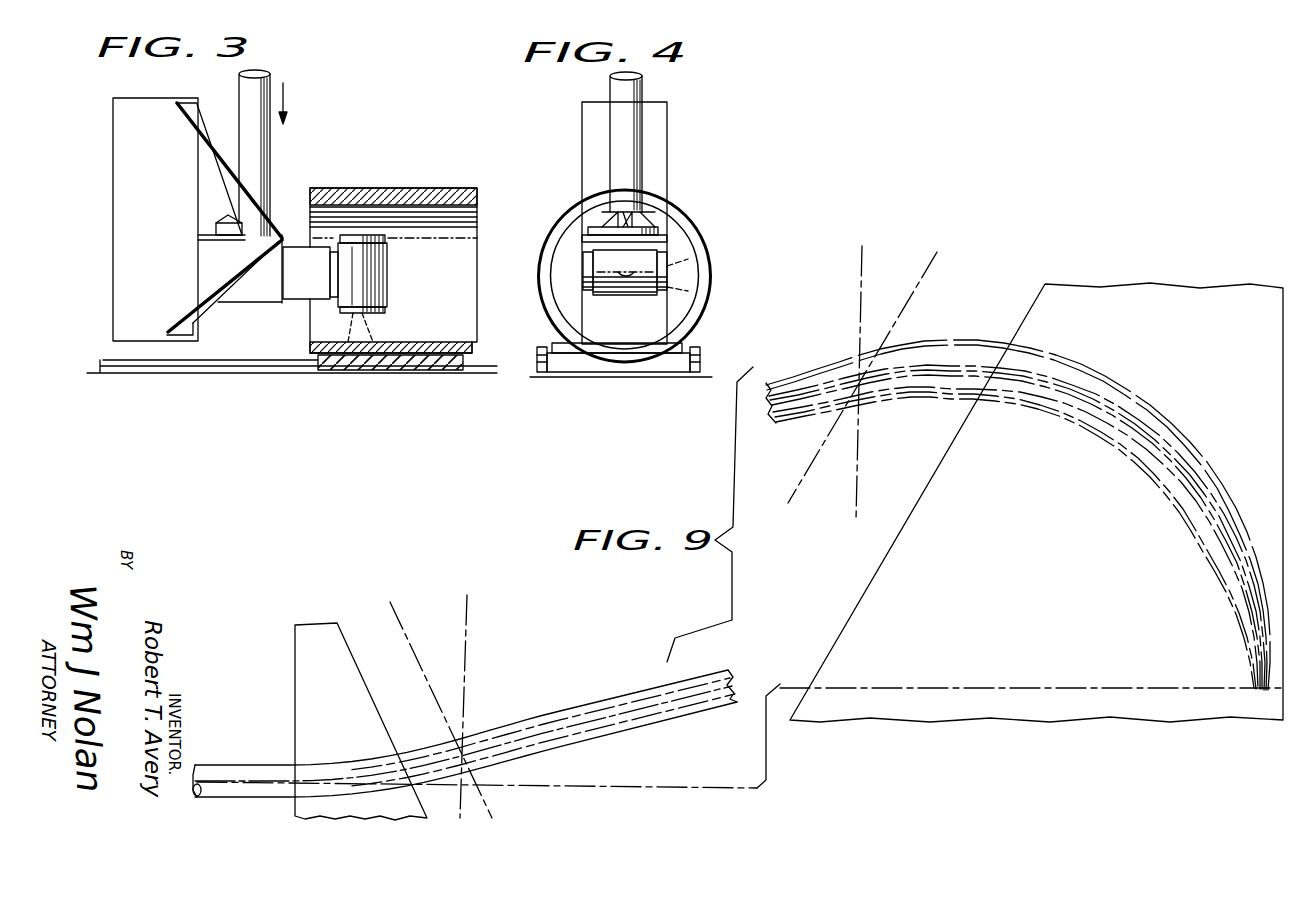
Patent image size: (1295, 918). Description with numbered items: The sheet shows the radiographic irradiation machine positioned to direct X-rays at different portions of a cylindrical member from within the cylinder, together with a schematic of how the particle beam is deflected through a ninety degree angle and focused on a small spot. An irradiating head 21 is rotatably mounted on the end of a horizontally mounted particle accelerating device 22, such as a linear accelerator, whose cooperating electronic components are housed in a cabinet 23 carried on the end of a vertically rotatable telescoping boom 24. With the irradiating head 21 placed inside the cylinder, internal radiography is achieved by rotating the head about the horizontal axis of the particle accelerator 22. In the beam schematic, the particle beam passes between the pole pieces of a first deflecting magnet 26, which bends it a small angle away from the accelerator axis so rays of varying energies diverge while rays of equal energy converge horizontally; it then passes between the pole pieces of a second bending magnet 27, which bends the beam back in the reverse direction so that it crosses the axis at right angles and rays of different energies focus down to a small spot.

In FIG. 3, the irradiating head 21 is at (373, 283).
In FIG. 4, the irradiating head 21 is at (627, 295).
In FIG. 3, the particle accelerating device 22 is at (303, 285).
In FIG. 3, the cabinet 23 is at (111, 213).
In FIG. 4, the cabinet 23 is at (675, 175).
In FIG. 3, the vertically rotatable telescoping boom 24 is at (257, 155).
In FIG. 4, the vertically rotatable telescoping boom 24 is at (623, 137).
In FIG. 9, the first deflecting magnet 26 is at (310, 678).
In FIG. 9, the second bending magnet 27 is at (915, 580).